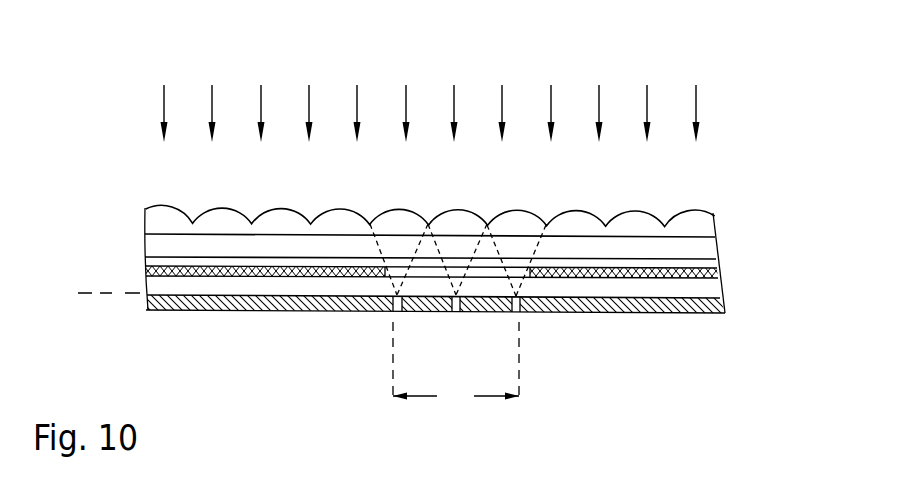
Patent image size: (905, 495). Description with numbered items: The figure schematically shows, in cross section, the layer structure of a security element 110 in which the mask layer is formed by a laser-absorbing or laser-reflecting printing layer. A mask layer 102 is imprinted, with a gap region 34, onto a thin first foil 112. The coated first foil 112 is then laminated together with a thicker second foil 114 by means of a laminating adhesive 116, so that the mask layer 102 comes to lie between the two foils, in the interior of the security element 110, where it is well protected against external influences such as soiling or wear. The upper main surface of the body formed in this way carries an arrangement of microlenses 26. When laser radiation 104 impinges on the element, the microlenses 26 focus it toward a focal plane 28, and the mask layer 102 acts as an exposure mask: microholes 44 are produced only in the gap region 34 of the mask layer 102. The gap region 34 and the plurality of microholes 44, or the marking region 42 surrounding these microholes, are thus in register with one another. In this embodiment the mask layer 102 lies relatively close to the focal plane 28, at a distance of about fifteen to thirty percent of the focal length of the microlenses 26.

The laser radiation 104 is at (696, 105).
The security element 110 is at (112, 165).
The microlenses 26 is at (692, 222).
The second foil 114 is at (708, 248).
The laminating adhesive 116 is at (435, 263).
The mask layer 102 is at (152, 272).
The gap region 34 is at (480, 272).
The first foil 112 is at (467, 321).
The microholes 44 is at (399, 313).
The focal plane 28 is at (89, 305).
The marking region 42 is at (456, 366).